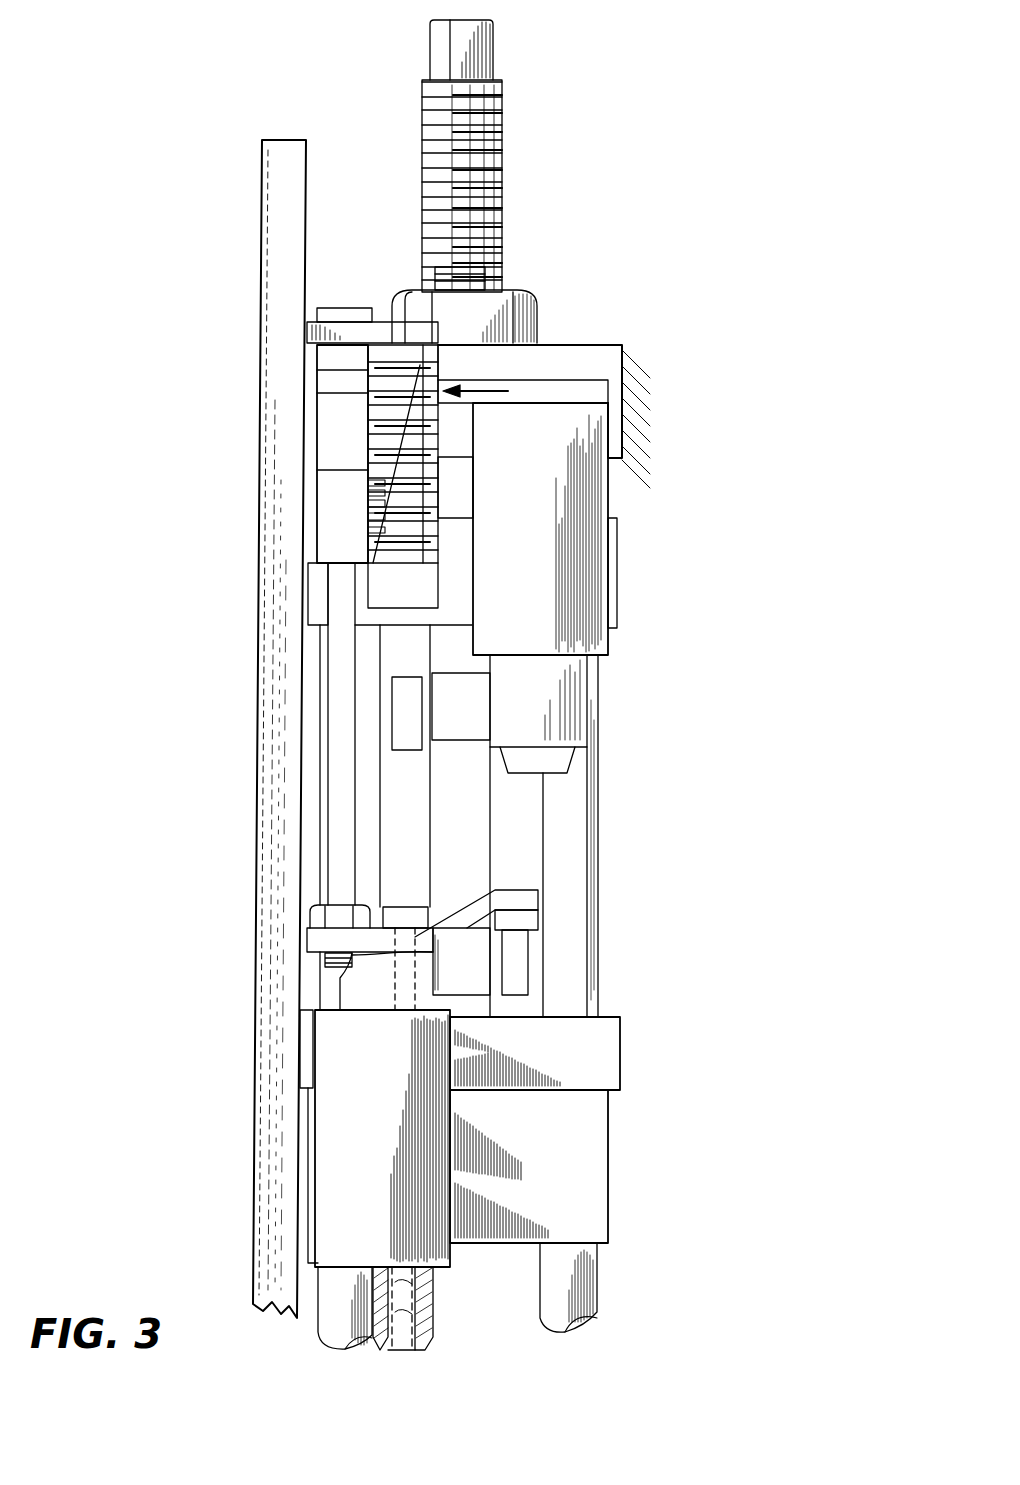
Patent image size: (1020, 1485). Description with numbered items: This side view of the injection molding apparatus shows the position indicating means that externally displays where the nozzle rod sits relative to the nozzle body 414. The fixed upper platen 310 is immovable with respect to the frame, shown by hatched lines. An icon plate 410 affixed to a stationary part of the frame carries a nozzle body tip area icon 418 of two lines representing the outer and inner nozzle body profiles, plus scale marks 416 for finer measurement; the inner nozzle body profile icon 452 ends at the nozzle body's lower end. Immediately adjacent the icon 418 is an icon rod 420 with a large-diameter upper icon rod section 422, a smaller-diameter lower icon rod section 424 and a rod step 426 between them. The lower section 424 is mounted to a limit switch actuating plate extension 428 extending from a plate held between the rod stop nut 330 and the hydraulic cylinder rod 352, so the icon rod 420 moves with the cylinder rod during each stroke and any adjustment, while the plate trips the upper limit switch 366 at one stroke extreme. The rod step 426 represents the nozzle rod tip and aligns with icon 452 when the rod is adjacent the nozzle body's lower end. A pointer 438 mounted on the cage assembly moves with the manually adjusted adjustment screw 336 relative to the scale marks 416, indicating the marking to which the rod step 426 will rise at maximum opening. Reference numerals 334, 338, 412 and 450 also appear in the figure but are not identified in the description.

The fixed upper platen 310 is at (608, 345).
The rod stop nut 330 is at (390, 905).
The bolt head 334 is at (495, 50).
The adjustment screw 336 is at (497, 105).
The nut 338 is at (533, 300).
The hydraulic cylinder rod 352 is at (400, 1283).
The upper limit switch 366 is at (608, 497).
The icon plate 410 is at (305, 347).
The tip 412 is at (400, 1350).
The nozzle body 414 is at (425, 1305).
The scale marks 416 is at (375, 527).
The nozzle body tip area icon 418 is at (420, 362).
The icon rod 420 is at (323, 425).
The upper icon rod section 422 is at (325, 473).
The lower icon rod section 424 is at (333, 727).
The rod step 426 is at (317, 567).
The limit switch actuating plate extension 428 is at (330, 938).
The pointer means 438 is at (565, 383).
The upper surface 450 is at (377, 370).
The inner nozzle body profile icon 452 is at (383, 393).